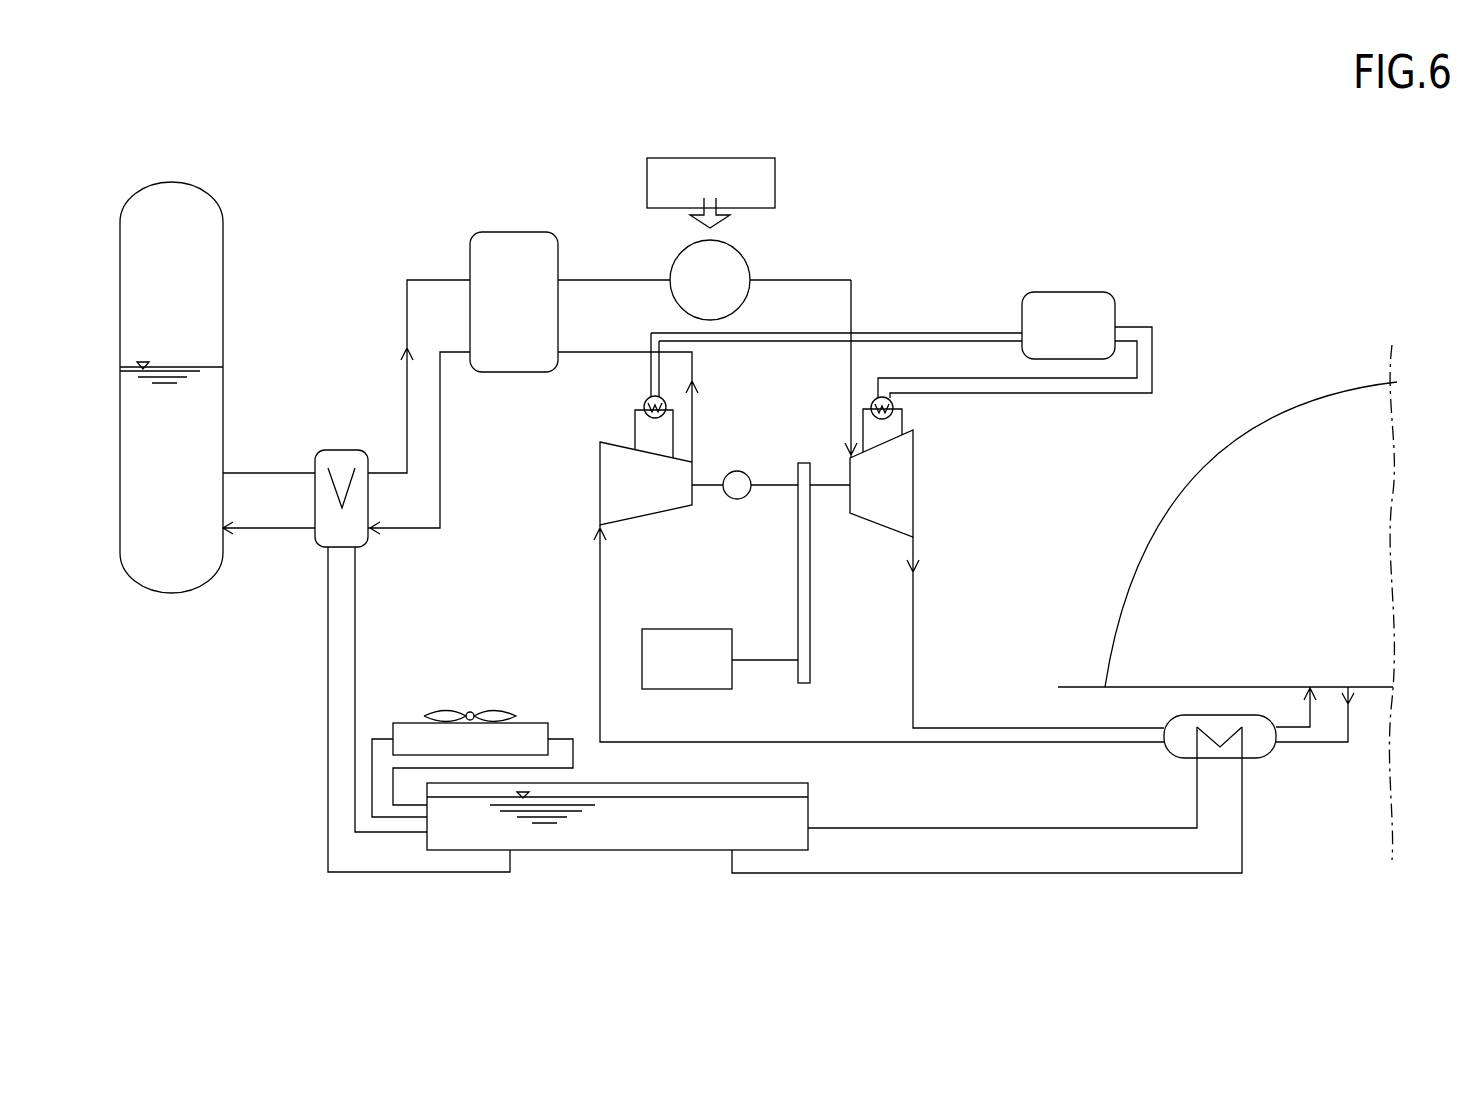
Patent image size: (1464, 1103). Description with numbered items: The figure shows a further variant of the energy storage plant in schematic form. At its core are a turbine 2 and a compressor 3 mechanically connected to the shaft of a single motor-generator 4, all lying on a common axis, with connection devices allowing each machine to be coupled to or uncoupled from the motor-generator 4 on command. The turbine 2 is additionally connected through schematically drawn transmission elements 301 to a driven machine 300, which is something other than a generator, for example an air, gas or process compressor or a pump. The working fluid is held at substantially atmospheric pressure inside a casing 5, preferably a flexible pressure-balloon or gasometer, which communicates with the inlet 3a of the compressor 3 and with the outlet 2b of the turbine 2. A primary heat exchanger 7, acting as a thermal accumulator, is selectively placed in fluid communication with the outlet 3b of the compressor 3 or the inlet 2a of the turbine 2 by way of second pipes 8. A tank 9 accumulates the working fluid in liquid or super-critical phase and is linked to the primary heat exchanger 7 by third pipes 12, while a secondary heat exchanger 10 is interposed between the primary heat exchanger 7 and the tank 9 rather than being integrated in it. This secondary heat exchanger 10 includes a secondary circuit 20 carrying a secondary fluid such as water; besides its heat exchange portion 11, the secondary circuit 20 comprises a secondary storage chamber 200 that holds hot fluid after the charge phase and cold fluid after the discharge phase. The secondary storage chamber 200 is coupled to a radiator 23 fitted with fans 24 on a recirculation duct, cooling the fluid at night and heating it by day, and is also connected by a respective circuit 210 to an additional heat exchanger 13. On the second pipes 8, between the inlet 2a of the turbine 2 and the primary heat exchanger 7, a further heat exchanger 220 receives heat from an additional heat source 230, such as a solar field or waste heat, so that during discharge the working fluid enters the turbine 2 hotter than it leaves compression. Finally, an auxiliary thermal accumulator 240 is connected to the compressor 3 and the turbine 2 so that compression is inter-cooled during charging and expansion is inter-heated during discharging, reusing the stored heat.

The turbine 2 is at (913, 455).
The inlet of the turbine 2a is at (848, 457).
The outlet of the turbine 2b is at (913, 533).
The compressor 3 is at (600, 483).
The inlet of the compressor 3a is at (600, 525).
The outlet of the compressor 3b is at (692, 462).
The motor-generator 4 is at (737, 471).
The casing 5 is at (1288, 417).
The primary heat exchanger 7 is at (483, 232).
The second pipes 8 is at (852, 300).
The tank 9 is at (120, 250).
The secondary heat exchanger 10 is at (317, 540).
The heat exchange portion 11 is at (355, 455).
The third pipes 12 is at (407, 278).
The additional heat exchanger 13 is at (1258, 760).
The secondary circuit 20 is at (322, 878).
The radiator 23 is at (535, 721).
The fans 24 is at (497, 711).
The secondary storage chamber 200 is at (683, 850).
The circuit 210 is at (1102, 882).
The further heat exchanger 220 is at (748, 268).
The additional heat source 230 is at (775, 170).
The auxiliary thermal accumulator 240 is at (1115, 303).
The driven machine 300 is at (690, 648).
The transmission elements 301 is at (805, 615).